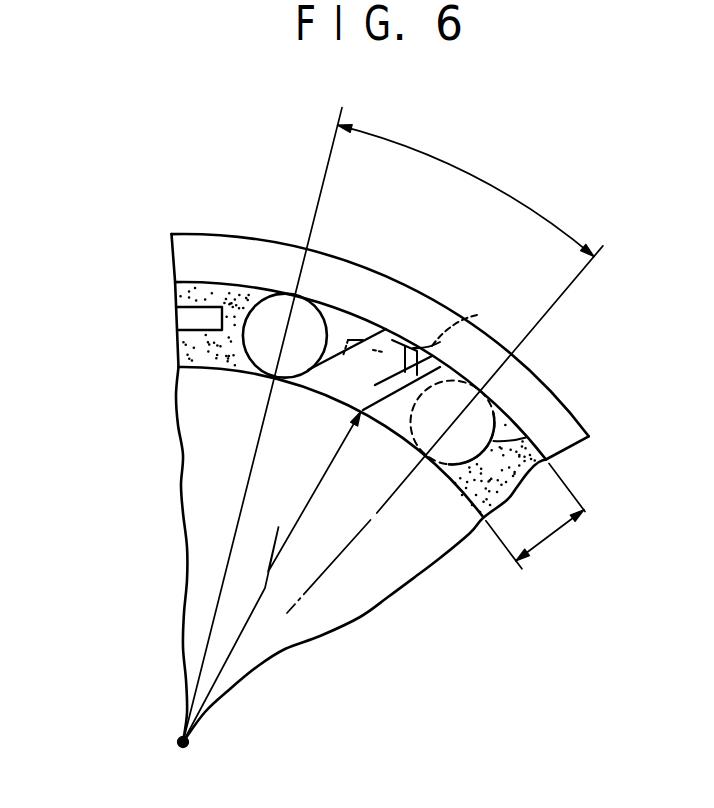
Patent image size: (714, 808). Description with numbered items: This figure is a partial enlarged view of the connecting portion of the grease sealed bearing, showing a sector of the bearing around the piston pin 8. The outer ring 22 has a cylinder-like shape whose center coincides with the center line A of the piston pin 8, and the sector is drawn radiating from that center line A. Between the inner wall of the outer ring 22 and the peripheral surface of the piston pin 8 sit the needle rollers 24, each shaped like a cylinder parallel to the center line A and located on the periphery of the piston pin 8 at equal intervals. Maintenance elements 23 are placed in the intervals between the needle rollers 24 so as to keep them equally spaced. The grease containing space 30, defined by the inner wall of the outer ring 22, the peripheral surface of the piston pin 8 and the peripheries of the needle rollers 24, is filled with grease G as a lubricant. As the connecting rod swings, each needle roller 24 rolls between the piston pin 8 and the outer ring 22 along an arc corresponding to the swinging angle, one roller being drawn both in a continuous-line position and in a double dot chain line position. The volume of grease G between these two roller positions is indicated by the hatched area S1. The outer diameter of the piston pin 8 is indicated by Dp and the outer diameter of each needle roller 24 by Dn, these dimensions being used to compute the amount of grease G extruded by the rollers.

The piston pin 8 is at (203, 472).
The outer ring 22 is at (274, 250).
The maintenance element 23 is at (187, 317).
The needle roller 24 is at (256, 308).
The grease containing space 30 is at (196, 287).
The hatched area S1 is at (368, 316).
The grease G is at (188, 353).
The center line A is at (187, 739).
The outer diameter of the piston pin Dp is at (272, 577).
The outer diameter of the needle roller Dn is at (535, 516).